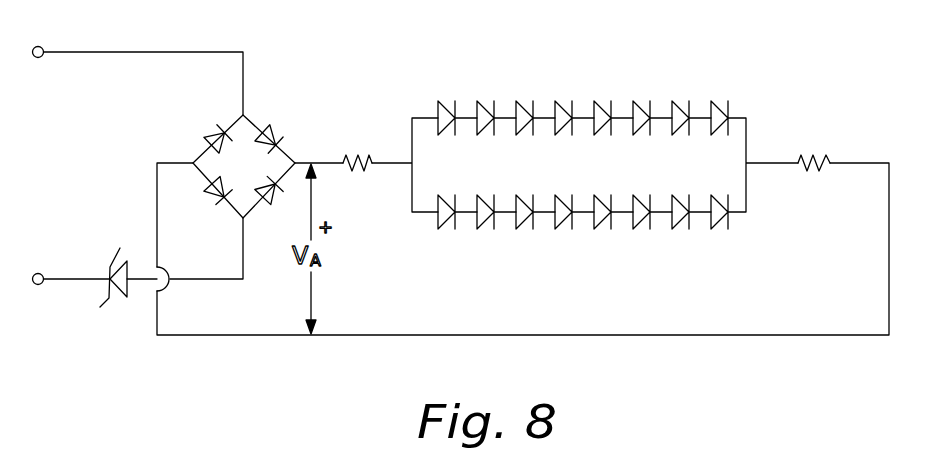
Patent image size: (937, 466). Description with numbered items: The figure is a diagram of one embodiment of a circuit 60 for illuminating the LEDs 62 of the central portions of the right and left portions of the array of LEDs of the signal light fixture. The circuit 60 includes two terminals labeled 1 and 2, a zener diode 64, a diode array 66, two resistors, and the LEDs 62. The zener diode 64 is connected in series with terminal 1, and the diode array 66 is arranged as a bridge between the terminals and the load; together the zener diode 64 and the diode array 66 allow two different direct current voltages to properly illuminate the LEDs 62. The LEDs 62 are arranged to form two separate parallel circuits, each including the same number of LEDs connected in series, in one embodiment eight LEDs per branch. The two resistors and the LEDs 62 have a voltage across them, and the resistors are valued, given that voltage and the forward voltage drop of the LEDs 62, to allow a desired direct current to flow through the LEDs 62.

The terminal 1 is at (39, 263).
The terminal 2 is at (38, 39).
The circuit 60 is at (583, 124).
The LEDs 62 is at (559, 86).
The zener diode 64 is at (108, 266).
The diode array 66 is at (288, 100).